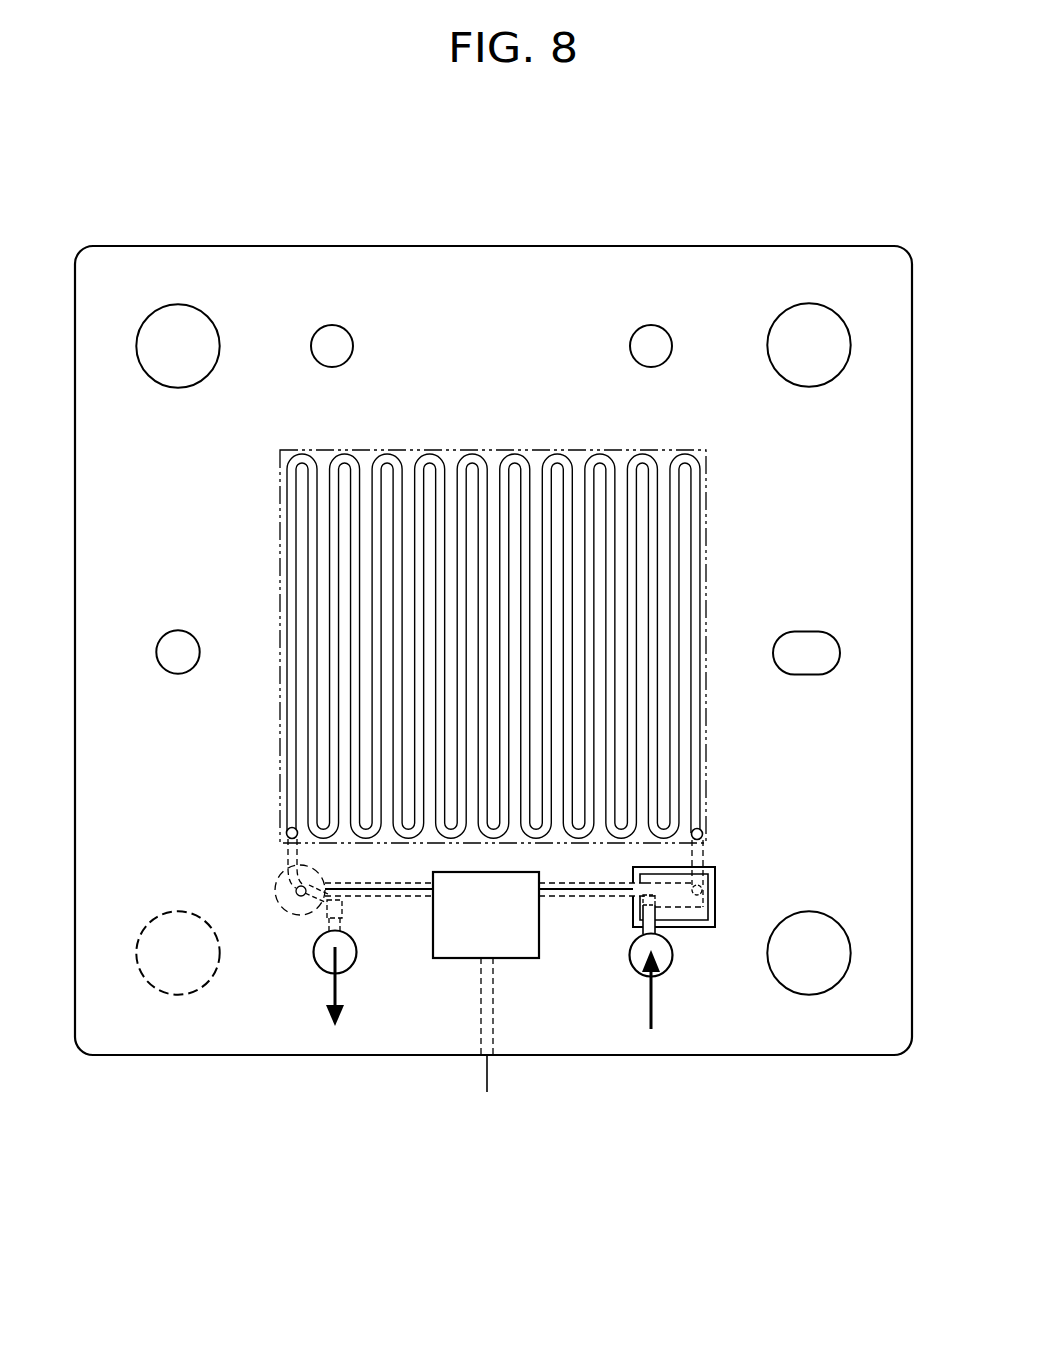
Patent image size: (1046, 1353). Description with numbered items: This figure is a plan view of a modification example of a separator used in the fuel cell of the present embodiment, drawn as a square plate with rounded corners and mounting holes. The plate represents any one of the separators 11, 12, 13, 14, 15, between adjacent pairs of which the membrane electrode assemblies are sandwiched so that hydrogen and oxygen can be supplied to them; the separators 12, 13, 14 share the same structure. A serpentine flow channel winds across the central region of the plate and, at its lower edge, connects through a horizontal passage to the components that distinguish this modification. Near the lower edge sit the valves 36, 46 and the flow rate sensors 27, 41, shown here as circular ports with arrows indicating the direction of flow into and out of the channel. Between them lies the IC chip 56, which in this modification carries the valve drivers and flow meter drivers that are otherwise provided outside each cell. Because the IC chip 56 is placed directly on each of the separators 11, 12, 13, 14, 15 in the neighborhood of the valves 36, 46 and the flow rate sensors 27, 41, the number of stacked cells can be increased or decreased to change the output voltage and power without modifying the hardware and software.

The separator 11 is at (493, 592).
The separator 12 is at (493, 650).
The separator 13 is at (493, 650).
The separator 14 is at (493, 650).
The separator 15 is at (489, 240).
The valve 36 is at (292, 986).
The valve 46 is at (280, 908).
The IC chip 56 is at (512, 943).
The flow rate sensor 27 is at (683, 986).
The flow rate sensor 41 is at (688, 927).